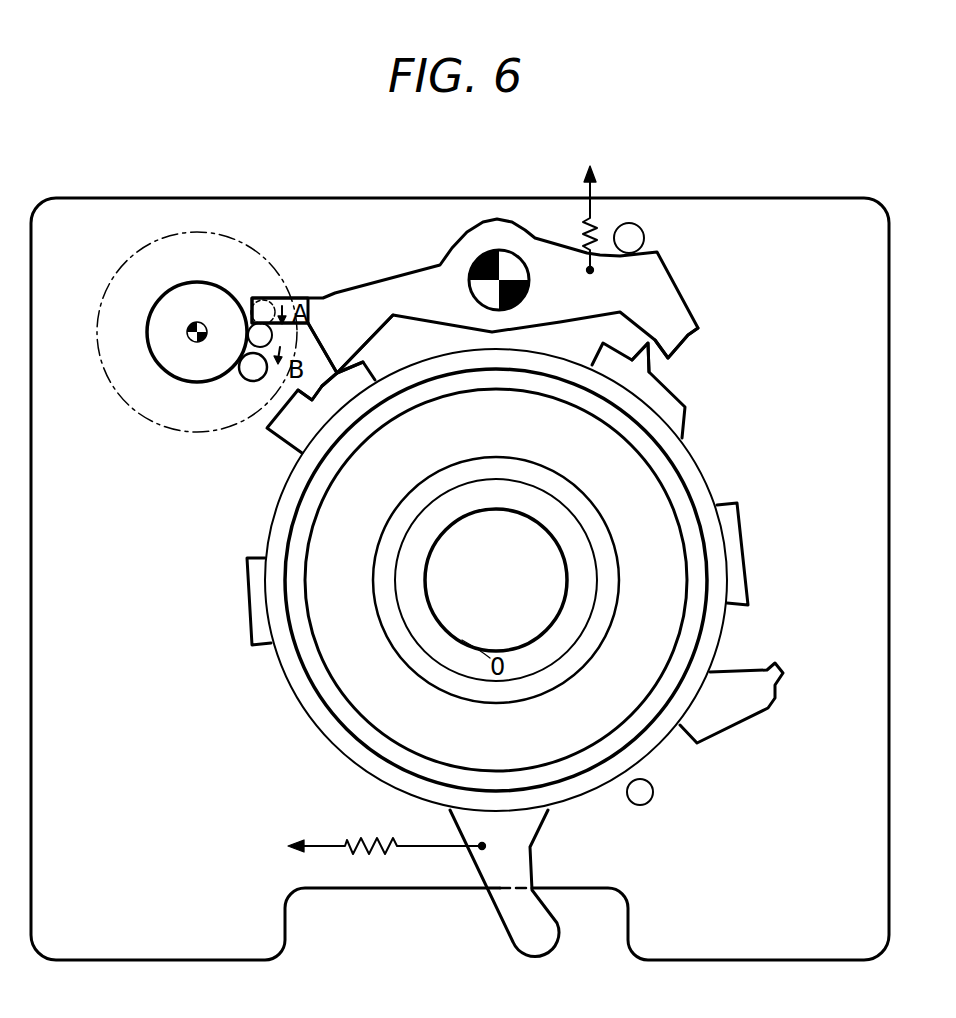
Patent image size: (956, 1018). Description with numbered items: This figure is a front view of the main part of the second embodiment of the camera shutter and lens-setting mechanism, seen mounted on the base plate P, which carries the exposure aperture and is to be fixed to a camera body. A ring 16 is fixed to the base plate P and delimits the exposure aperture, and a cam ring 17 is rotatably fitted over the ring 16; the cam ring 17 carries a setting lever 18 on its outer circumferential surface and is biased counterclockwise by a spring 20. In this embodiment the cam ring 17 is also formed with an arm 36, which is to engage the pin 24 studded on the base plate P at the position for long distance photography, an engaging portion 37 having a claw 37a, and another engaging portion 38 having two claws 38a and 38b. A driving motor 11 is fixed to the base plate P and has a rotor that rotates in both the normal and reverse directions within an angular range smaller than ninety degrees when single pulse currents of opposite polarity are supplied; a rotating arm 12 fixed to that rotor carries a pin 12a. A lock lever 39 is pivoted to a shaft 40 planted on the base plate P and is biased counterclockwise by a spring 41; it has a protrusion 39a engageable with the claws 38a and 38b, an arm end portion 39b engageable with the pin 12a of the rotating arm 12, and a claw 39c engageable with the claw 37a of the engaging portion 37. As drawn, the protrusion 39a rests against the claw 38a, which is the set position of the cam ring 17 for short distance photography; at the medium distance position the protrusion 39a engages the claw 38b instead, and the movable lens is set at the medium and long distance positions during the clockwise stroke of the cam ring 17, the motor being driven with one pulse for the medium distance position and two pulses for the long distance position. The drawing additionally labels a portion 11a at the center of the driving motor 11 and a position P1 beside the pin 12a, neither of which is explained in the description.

The driving motor 11 is at (250, 247).
The shaft of rotary member 11a is at (192, 342).
The rotating arm 12 is at (188, 378).
The pin 12a is at (248, 333).
The ring 16 is at (428, 642).
The cam ring 17 is at (290, 690).
The setting lever 18 is at (527, 940).
The spring 20 is at (383, 862).
The stopper 24 is at (645, 797).
The arm 36 is at (708, 720).
The engaging portion 37 is at (680, 417).
The claw 37a is at (652, 355).
The engaging portion 38 is at (288, 430).
The claw 38a is at (330, 370).
The claw 38b is at (325, 378).
The lock lever 39 is at (522, 237).
The protrusion 39a is at (356, 343).
The arm end portion 39b is at (268, 300).
The claw 39c is at (672, 337).
The shaft 40 is at (482, 268).
The spring 41 is at (600, 205).
The base plate P is at (785, 215).
The pin position P1 is at (250, 382).